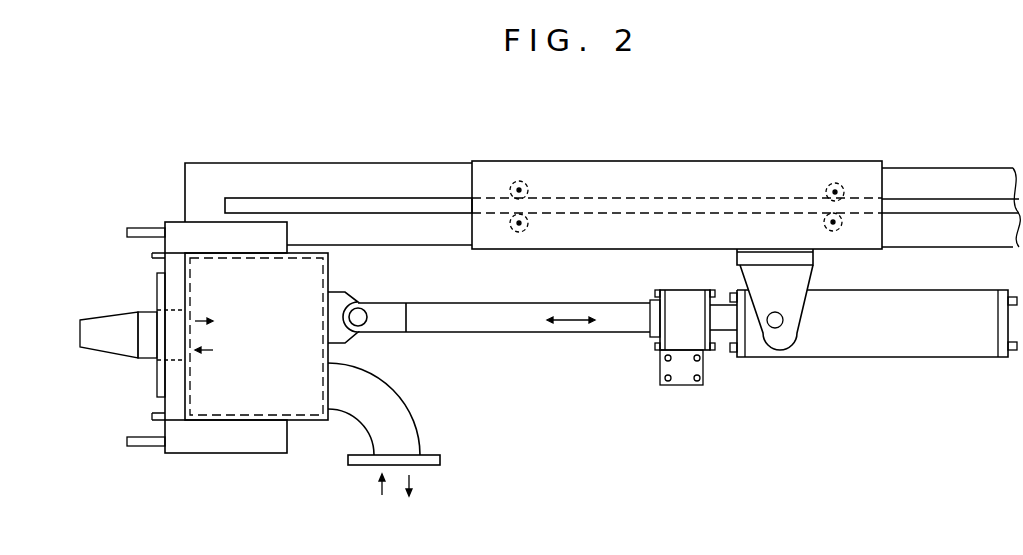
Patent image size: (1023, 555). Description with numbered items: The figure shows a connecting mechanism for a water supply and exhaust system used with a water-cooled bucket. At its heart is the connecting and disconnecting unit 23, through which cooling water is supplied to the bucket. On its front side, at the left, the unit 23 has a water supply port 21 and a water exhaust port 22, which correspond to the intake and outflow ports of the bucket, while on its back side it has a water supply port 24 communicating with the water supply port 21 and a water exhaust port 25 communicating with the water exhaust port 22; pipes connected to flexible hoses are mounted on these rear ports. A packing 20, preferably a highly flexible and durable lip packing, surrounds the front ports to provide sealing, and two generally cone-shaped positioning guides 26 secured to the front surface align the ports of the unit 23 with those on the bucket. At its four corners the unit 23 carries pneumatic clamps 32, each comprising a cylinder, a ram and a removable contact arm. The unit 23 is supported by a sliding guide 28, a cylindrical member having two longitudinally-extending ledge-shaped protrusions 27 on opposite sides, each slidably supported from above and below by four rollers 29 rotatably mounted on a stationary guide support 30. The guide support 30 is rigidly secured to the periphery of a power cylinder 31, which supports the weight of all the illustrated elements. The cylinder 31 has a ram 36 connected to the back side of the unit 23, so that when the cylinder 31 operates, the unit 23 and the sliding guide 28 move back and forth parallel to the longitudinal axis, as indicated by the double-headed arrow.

The packing 20 is at (157, 362).
The water supply port 21 is at (231, 351).
The water exhaust port 22 is at (231, 323).
The connecting and disconnecting unit 23 is at (303, 421).
The water supply port 24 is at (383, 499).
The water exhaust port 25 is at (418, 499).
The positioning guide 26 is at (87, 320).
The ledge-shaped protrusion 27 is at (353, 198).
The sliding guide 28 is at (293, 177).
The roller 29 is at (518, 215).
The guide support 30 is at (656, 161).
The power cylinder 31 is at (896, 357).
The pneumatic clamp 32 is at (143, 228).
The ram 36 is at (500, 331).